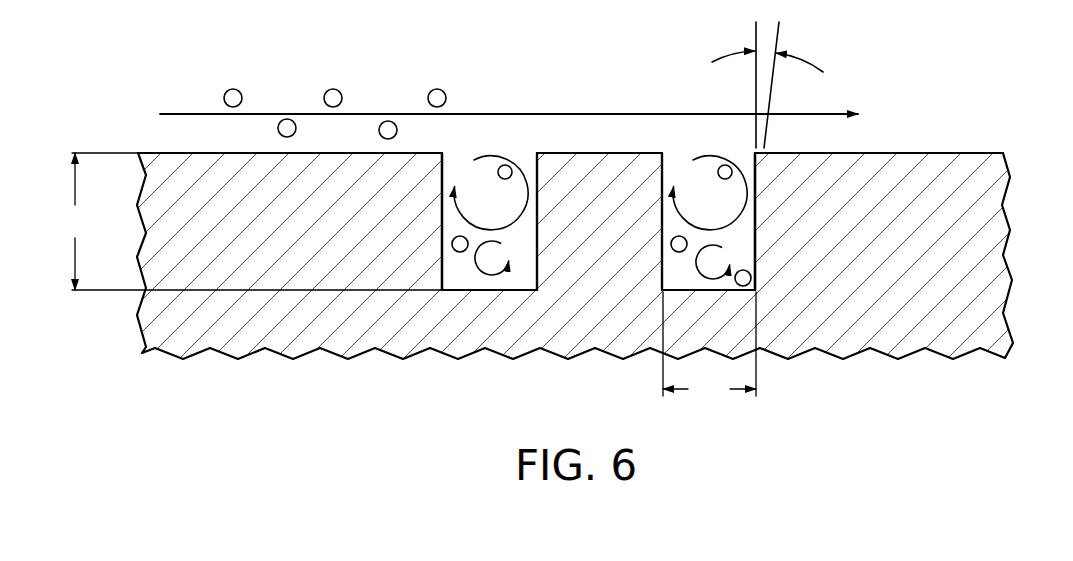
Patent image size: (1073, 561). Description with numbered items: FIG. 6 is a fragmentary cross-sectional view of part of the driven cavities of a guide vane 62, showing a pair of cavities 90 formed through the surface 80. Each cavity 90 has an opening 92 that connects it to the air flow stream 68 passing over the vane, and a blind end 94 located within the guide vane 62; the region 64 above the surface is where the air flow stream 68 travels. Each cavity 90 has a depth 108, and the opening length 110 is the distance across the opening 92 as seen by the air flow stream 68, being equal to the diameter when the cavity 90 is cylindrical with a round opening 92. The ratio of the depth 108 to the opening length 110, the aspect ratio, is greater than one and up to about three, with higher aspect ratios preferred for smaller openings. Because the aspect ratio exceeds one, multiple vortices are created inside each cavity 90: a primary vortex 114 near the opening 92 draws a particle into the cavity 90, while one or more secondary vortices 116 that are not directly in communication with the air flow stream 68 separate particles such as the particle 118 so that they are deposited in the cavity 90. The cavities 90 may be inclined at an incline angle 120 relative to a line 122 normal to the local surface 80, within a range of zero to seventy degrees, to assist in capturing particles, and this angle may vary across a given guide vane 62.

The guide vane 62 is at (985, 210).
The processing environment above substrate 64 is at (895, 120).
The air flow stream 68 is at (176, 112).
The surface 80 is at (970, 153).
The cavity 90 is at (450, 272).
The opening 92 is at (445, 159).
The blind end 94 is at (522, 290).
The depth 108 is at (247, 221).
The opening length 110 is at (709, 347).
The primary vortex 114 is at (455, 196).
The secondary vortex 116 is at (492, 278).
The particle 118 is at (452, 244).
The incline angle 120 is at (797, 55).
The line normal to the local surface 122 is at (775, 78).